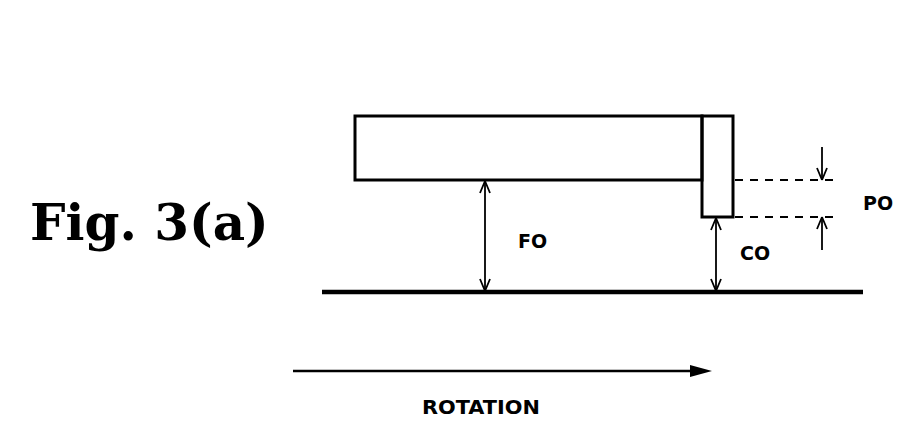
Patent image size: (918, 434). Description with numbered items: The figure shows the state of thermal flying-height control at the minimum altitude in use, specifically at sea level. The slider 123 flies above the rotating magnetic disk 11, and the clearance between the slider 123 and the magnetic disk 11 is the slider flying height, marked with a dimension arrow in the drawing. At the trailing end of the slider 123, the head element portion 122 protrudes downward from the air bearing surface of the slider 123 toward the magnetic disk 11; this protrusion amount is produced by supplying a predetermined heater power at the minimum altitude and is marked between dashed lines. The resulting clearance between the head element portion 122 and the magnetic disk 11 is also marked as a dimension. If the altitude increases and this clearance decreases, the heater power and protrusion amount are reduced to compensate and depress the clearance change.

The slider 123 is at (437, 115).
The head element portion 122 is at (714, 115).
The magnetic disk 11 is at (365, 290).